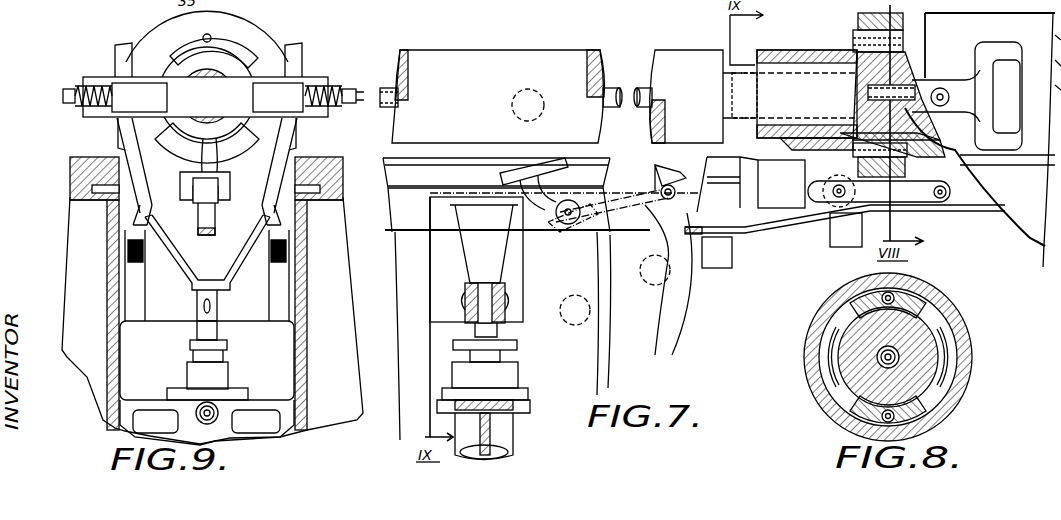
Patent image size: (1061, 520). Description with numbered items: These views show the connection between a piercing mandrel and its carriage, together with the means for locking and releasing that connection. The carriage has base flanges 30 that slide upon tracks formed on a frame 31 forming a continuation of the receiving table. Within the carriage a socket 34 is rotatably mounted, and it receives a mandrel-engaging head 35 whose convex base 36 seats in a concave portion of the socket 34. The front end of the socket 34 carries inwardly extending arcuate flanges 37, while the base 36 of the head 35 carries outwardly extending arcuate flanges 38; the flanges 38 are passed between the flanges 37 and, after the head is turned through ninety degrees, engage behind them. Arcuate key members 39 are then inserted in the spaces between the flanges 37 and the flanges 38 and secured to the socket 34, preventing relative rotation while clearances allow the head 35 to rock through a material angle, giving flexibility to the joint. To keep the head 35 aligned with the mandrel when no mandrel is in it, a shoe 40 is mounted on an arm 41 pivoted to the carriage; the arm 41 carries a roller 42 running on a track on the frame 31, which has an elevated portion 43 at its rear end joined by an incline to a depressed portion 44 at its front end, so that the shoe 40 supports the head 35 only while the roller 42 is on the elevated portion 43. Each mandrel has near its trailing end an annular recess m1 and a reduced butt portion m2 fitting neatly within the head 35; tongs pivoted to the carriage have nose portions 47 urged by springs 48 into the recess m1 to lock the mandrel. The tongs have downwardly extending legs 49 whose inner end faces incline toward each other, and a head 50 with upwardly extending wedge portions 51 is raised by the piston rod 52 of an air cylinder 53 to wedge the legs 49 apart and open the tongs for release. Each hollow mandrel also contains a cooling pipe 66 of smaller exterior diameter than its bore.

In FIG. 9, the base flanges 30 is at (108, 177).
In FIG. 9, the frame 31 is at (68, 208).
In FIG. 9, the socket 34 is at (172, 24).
In FIG. 8, the socket 34 is at (950, 314).
In FIG. 9, the mandrel-engaging head 35 is at (236, 62).
In FIG. 7, the mandrel-engaging head 35 is at (780, 50).
In FIG. 8, the mandrel-engaging head 35 is at (916, 366).
In FIG. 9, the convex base 36 is at (207, 96).
In FIG. 7, the convex base 36 is at (860, 48).
In FIG. 8, the convex base 36 is at (882, 338).
In FIG. 9, the arcuate flanges of the socket 37 is at (142, 62).
In FIG. 8, the arcuate flanges of the head 38 is at (832, 355).
In FIG. 9, the arcuate key members 39 is at (228, 150).
In FIG. 7, the arcuate key members 39 is at (888, 35).
In FIG. 8, the arcuate key members 39 is at (856, 410).
In FIG. 7, the shoe 40 is at (540, 172).
In FIG. 7, the arm 41 is at (925, 223).
In FIG. 7, the roller 42 is at (829, 244).
In FIG. 7, the elevated portion 43 is at (973, 208).
In FIG. 7, the depressed portion 44 is at (545, 232).
In FIG. 9, the nose portions 47 is at (130, 100).
In FIG. 9, the springs 48 is at (82, 98).
In FIG. 9, the legs 49 is at (278, 192).
In FIG. 7, the legs 49 is at (760, 240).
In FIG. 9, the head 50 is at (152, 300).
In FIG. 7, the head 50 is at (512, 290).
In FIG. 9, the wedge portions 51 is at (150, 203).
In FIG. 7, the wedge portions 51 is at (470, 210).
In FIG. 9, the piston rod 52 is at (220, 334).
In FIG. 7, the piston rod 52 is at (490, 336).
In FIG. 9, the air cylinder 53 is at (258, 422).
In FIG. 7, the air cylinder 53 is at (515, 380).
In FIG. 7, the pipe 66 is at (612, 87).
In FIG. 7, the motor m is at (554, 68).
In FIG. 7, the annular recess m1 is at (742, 80).
In FIG. 7, the reduced butt portion m2 is at (798, 100).